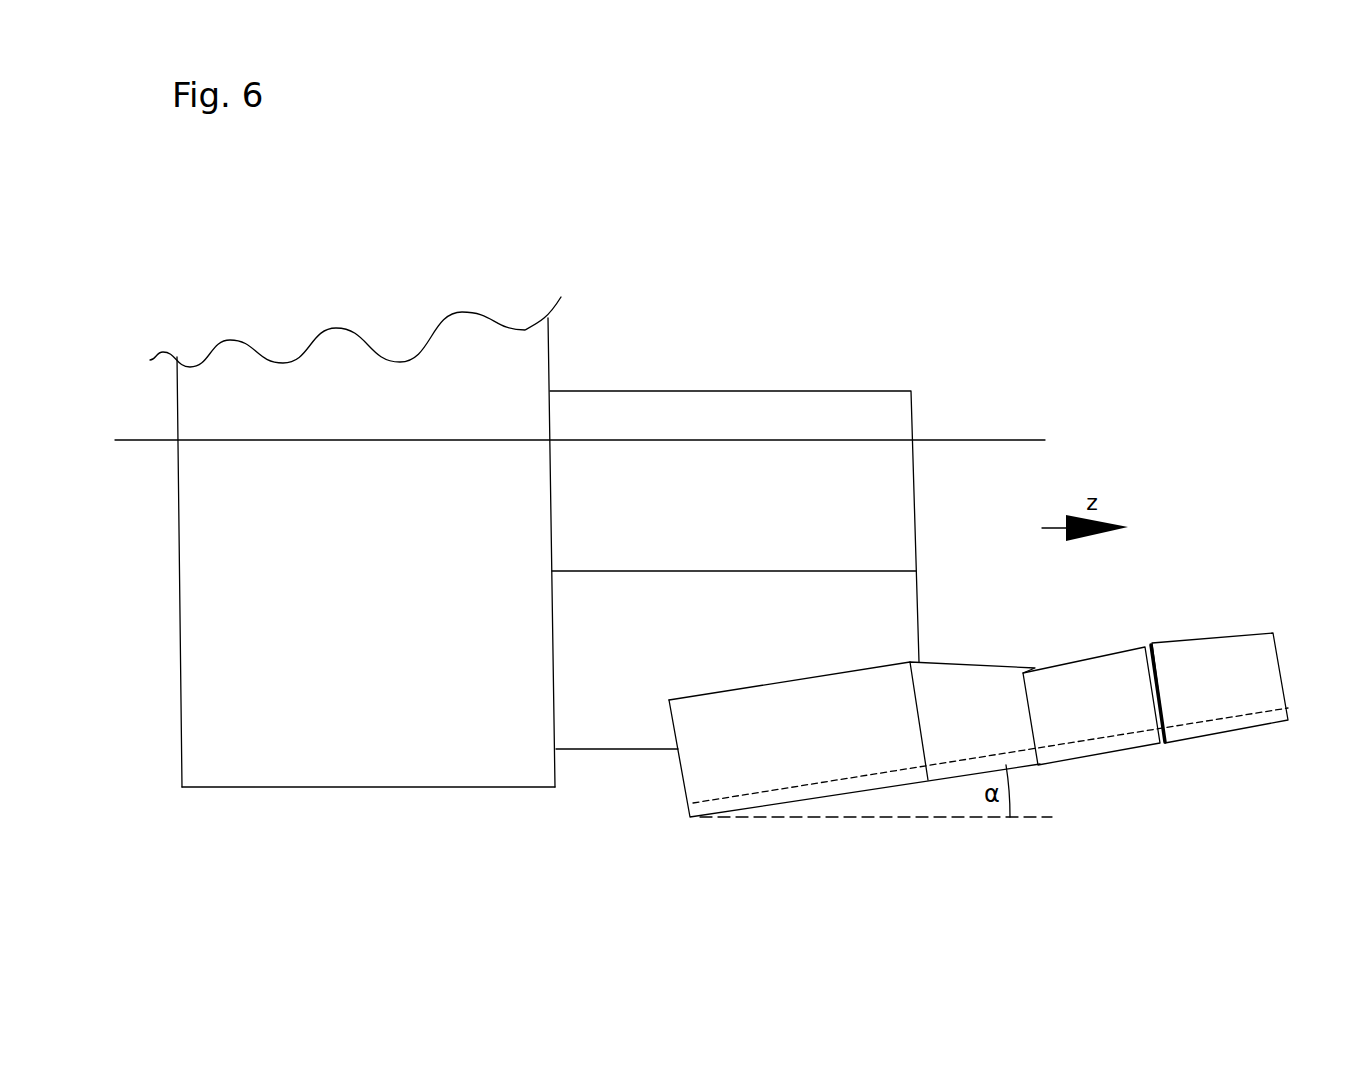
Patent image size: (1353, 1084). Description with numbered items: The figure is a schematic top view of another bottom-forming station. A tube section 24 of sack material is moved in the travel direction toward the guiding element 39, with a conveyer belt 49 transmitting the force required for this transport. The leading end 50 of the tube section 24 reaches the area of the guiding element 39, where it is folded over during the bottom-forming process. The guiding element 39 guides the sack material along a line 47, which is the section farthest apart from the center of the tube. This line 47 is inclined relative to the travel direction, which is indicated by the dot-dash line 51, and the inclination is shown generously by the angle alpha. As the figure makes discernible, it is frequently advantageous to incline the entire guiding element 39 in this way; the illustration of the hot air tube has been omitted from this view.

The tube section 24 is at (346, 601).
The guiding element 39 is at (1110, 720).
The line 47 is at (783, 792).
The conveyer belt 49 is at (962, 438).
The end of the tube section 50 is at (370, 787).
The dot-dash line 51 is at (863, 817).